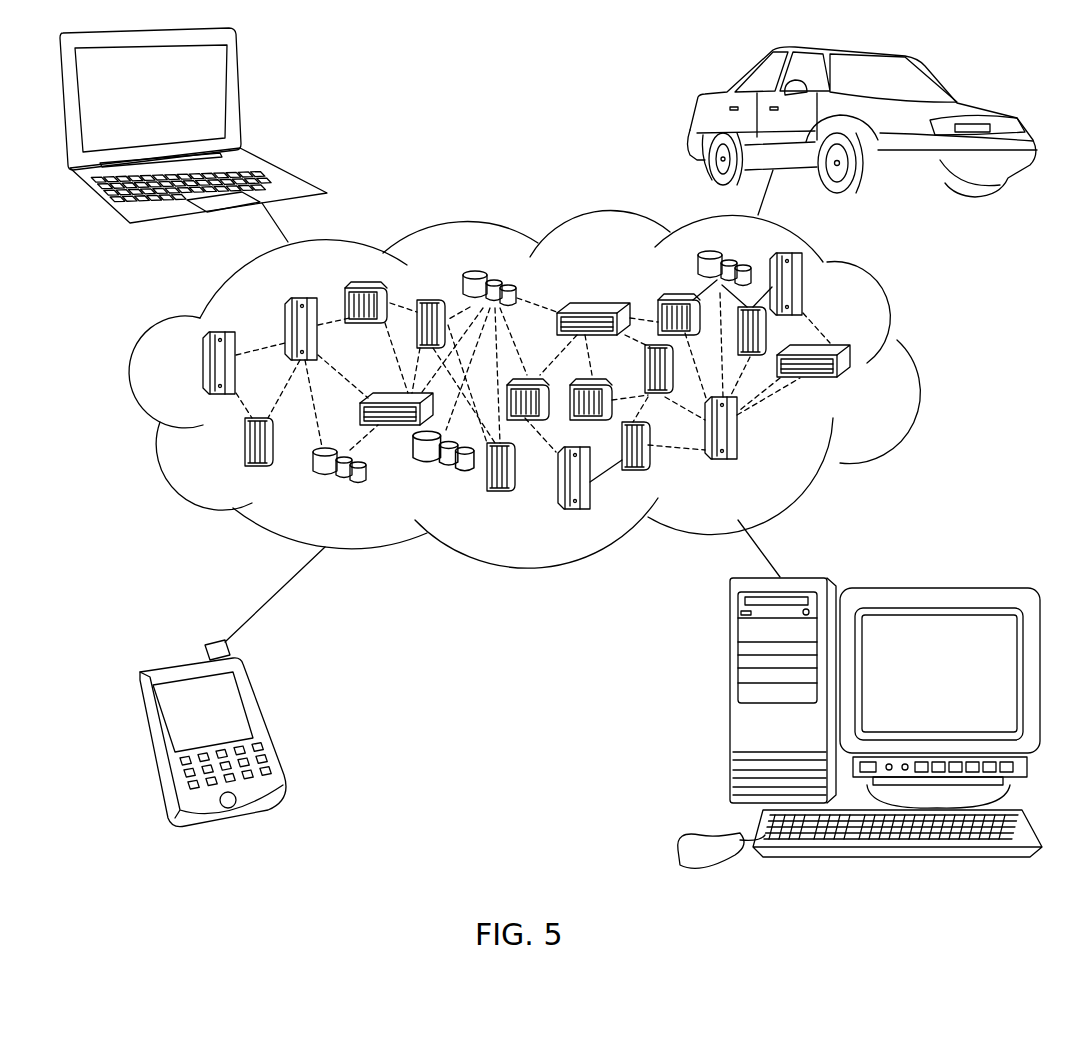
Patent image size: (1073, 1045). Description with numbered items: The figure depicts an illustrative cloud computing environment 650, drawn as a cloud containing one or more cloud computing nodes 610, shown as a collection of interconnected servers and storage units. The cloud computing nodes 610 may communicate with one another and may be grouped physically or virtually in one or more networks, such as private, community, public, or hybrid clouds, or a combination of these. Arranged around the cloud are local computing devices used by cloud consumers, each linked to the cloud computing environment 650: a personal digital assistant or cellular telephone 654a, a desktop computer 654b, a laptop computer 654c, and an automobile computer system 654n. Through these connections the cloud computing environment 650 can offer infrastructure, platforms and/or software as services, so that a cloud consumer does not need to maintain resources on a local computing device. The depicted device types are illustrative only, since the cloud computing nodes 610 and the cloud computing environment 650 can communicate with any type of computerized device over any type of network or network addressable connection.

The cloud computing environment 650 is at (900, 303).
The cloud computing nodes 610 is at (868, 385).
The personal digital assistant or cellular telephone 654a is at (263, 710).
The desktop computer 654b is at (730, 703).
The laptop computer 654c is at (237, 92).
The automobile computer system 654n is at (703, 95).